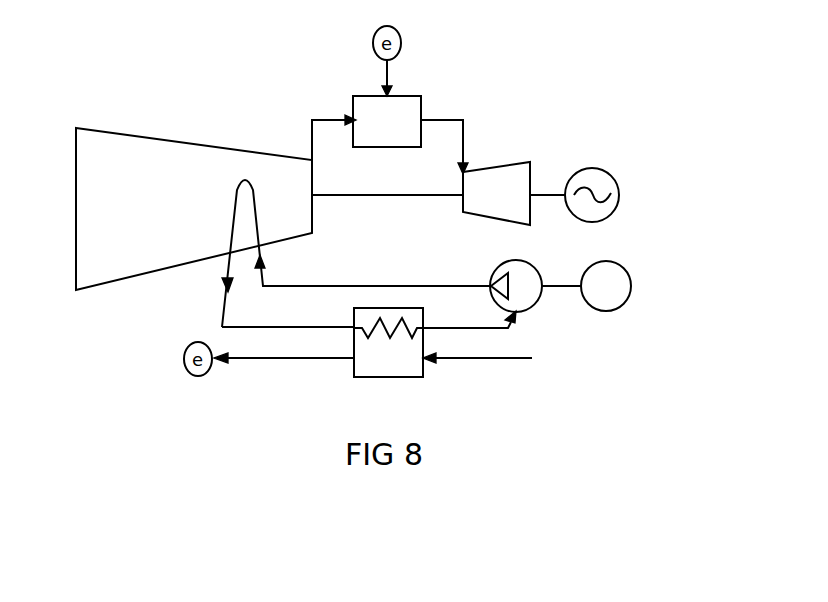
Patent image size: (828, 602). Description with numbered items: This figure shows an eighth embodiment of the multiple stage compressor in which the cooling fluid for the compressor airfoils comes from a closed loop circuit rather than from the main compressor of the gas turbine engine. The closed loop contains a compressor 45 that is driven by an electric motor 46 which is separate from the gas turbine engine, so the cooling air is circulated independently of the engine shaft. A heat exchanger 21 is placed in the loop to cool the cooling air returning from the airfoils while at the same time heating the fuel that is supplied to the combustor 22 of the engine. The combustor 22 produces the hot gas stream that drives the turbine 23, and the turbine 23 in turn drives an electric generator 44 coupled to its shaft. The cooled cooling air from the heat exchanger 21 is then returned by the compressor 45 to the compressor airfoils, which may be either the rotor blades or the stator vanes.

The heat exchanger 21 is at (399, 345).
The combustor 22 is at (395, 113).
The turbine 23 is at (500, 188).
The electric generator 44 is at (612, 182).
The compressor 45 is at (523, 292).
The pump 46 is at (620, 287).